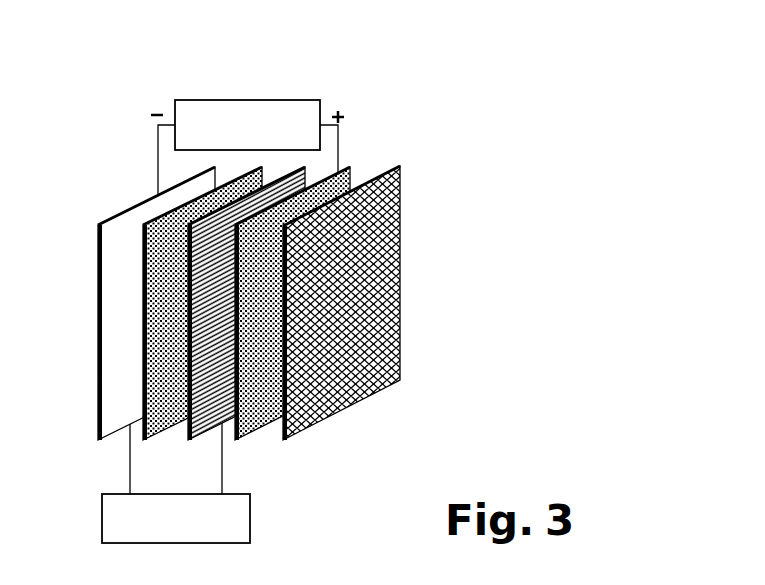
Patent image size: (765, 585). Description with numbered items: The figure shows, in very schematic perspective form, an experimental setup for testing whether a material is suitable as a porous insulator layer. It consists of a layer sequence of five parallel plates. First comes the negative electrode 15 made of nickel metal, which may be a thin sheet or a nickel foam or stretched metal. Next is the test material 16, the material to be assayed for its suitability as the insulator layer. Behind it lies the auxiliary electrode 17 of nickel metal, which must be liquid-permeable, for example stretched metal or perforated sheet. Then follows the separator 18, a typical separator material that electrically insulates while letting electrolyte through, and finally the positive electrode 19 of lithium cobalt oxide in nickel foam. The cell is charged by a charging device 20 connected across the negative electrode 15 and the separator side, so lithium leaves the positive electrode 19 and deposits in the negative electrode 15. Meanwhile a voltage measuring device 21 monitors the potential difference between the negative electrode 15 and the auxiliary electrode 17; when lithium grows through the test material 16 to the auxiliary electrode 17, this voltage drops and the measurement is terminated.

The negative electrode 15 is at (113, 413).
The test material 16 is at (167, 417).
The auxiliary electrode 17 is at (208, 413).
The separator 18 is at (258, 410).
The positive electrode 19 is at (323, 410).
The charging device 20 is at (290, 118).
The voltage measuring device 21 is at (228, 525).